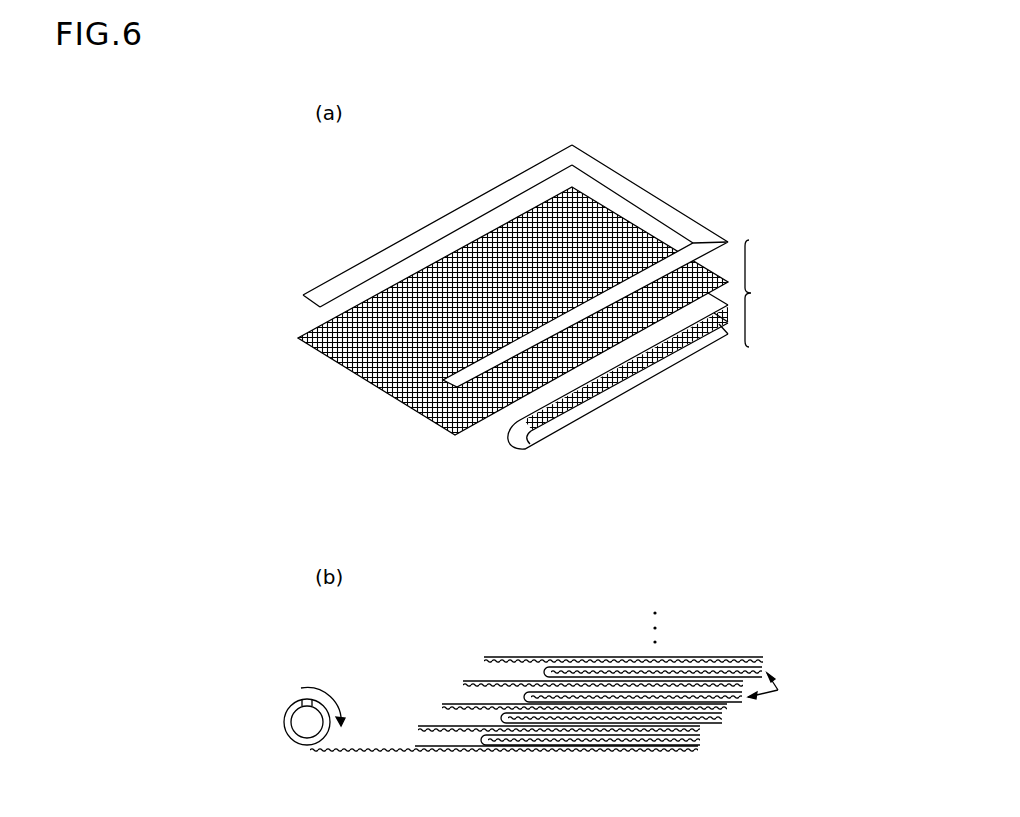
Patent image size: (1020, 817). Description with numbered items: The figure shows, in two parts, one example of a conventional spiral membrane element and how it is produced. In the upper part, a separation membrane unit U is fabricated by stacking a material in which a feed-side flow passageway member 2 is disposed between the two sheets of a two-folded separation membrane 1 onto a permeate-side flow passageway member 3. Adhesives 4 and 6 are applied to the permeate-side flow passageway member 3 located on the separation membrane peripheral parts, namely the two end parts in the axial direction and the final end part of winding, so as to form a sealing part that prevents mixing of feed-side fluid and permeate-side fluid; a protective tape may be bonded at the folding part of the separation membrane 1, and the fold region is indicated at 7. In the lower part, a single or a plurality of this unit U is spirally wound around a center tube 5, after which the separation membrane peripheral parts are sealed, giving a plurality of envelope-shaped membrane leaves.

The separation membrane 1 is at (558, 753).
The feed-side flow passageway member 2 is at (648, 373).
The permeate-side flow passageway member 3 is at (402, 403).
The adhesive 4 is at (527, 173).
The center tube 5 is at (292, 740).
The adhesive 6 is at (636, 188).
The separator fold 7 is at (573, 381).
The separation membrane unit U is at (771, 478).